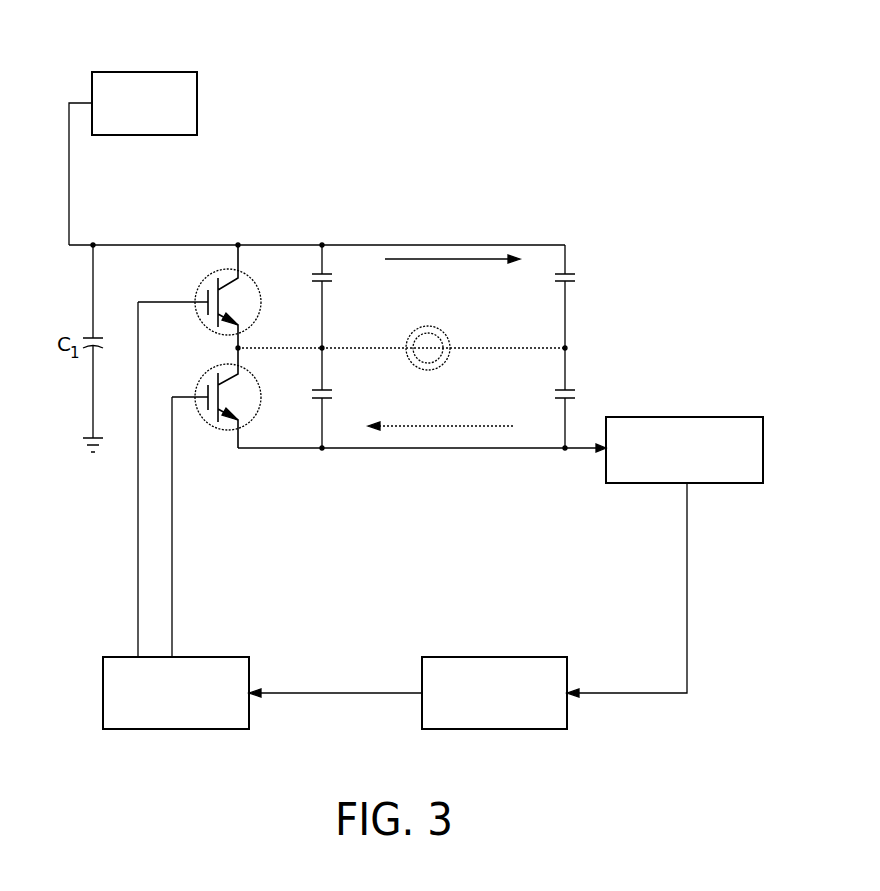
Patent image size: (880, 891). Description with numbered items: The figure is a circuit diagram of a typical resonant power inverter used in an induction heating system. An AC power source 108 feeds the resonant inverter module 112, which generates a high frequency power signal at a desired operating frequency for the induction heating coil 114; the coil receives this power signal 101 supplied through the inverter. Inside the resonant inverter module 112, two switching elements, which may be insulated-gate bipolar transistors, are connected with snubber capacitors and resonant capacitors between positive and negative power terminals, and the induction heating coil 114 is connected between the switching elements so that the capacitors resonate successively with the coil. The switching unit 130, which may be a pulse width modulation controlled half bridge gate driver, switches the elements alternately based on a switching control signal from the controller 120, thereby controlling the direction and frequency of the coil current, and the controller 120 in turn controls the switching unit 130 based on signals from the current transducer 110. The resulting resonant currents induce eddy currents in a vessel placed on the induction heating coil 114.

The AC power source 108 is at (144, 72).
The power signal 101 is at (166, 245).
The resonant inverter module 112 is at (300, 210).
The induction heating coil 114 is at (447, 333).
The current transducer 110 is at (697, 417).
The controller 120 is at (567, 717).
The switching unit 130 is at (249, 713).